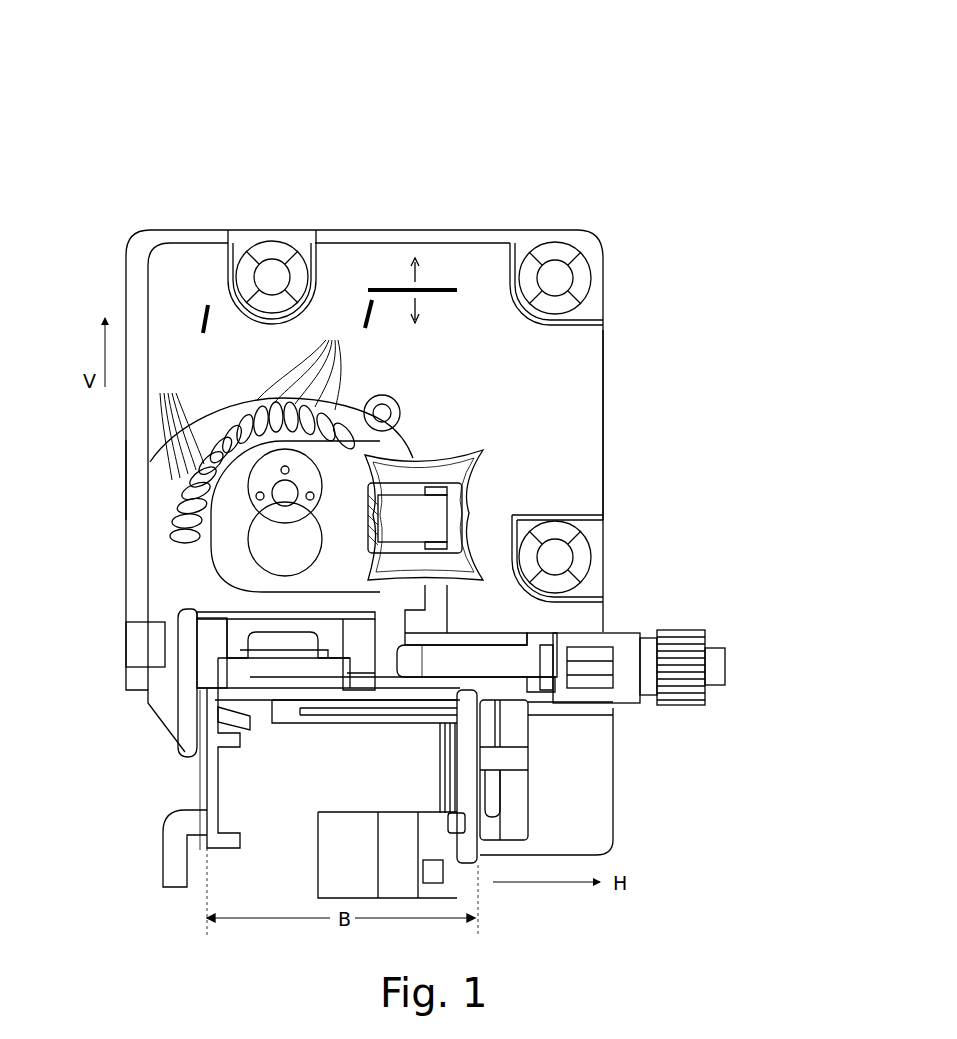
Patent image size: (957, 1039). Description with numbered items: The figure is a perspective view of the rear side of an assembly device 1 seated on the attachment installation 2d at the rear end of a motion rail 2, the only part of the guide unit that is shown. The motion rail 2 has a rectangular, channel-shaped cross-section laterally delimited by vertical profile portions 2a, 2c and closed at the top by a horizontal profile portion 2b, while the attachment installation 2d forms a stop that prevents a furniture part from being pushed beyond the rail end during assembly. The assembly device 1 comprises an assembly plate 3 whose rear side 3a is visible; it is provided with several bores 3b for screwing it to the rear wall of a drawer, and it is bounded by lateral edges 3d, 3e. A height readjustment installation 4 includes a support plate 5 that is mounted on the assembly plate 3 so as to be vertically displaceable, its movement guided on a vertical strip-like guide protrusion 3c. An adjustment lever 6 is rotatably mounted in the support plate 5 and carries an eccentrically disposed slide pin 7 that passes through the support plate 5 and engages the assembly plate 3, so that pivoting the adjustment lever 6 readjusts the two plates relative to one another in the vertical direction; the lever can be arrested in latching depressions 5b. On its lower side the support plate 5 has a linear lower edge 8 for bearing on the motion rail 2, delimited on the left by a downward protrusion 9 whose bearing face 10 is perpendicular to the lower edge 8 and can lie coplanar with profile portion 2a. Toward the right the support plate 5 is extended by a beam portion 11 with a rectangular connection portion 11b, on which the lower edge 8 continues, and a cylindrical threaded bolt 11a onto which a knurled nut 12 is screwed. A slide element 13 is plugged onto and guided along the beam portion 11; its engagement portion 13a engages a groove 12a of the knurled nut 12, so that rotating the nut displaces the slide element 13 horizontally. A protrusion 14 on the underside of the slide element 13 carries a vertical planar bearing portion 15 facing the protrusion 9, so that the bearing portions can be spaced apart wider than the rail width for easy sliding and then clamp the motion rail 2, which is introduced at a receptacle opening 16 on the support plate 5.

The assembly device 1 is at (598, 128).
The motion rail 2 is at (190, 799).
The vertical profile portion 2a is at (218, 793).
The horizontal profile portion 2b is at (316, 698).
The vertical profile portion 2c is at (445, 785).
The attachment installation 2d is at (260, 672).
The assembly plate 3 is at (180, 228).
The rear side 3a is at (398, 389).
The bores 3b is at (295, 290).
The guide protrusion 3c is at (430, 628).
The lateral edge 3d is at (603, 380).
The lateral edge 3e is at (125, 440).
The height readjustment installation 4 is at (124, 480).
The support plate 5 is at (160, 512).
The latching depressions 5b is at (245, 397).
The adjustment lever 6 is at (483, 473).
The slide pin 7 is at (265, 540).
The lower edge 8 is at (374, 684).
The protrusion 9 is at (165, 722).
The bearing face 10 is at (200, 707).
The beam portion 11 is at (520, 648).
The threaded bolt 11a is at (729, 664).
The connection portion 11b is at (472, 758).
The knurled nut 12 is at (700, 705).
The groove 12a is at (650, 640).
The slide element 13 is at (624, 630).
The engagement portion 13a is at (635, 705).
The protrusion 14 is at (505, 702).
The bearing portion 15 is at (495, 712).
The receptacle opening 16 is at (238, 642).